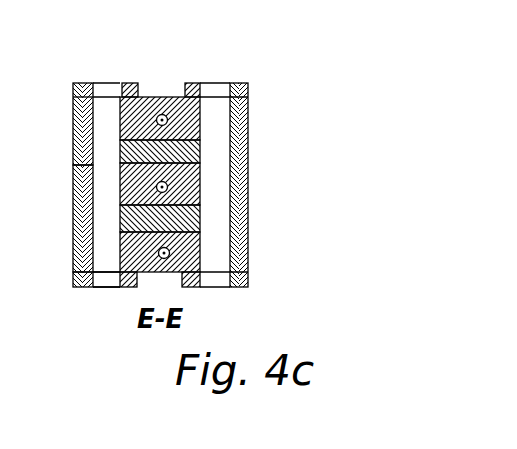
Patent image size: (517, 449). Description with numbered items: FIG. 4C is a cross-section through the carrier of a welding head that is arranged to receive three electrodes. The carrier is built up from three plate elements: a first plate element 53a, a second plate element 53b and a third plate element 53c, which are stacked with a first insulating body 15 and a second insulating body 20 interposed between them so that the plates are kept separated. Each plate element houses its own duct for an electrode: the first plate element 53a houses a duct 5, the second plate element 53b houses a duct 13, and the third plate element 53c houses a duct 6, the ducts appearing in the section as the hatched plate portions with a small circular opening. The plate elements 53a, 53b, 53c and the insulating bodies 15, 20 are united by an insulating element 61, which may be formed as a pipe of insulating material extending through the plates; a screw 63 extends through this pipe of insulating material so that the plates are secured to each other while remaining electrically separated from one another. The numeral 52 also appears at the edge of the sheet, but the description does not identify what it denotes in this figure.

The housing 52 is at (8, 52).
The second plate element 53b is at (160, 98).
The duct 13 is at (168, 112).
The first insulating body 15 is at (73, 153).
The first plate element 53a is at (200, 163).
The duct 5 is at (168, 186).
The second insulating body 20 is at (72, 220).
The duct 6 is at (168, 253).
The insulating element 61 is at (88, 289).
The screw 63 is at (103, 278).
The third plate element 53c is at (134, 276).